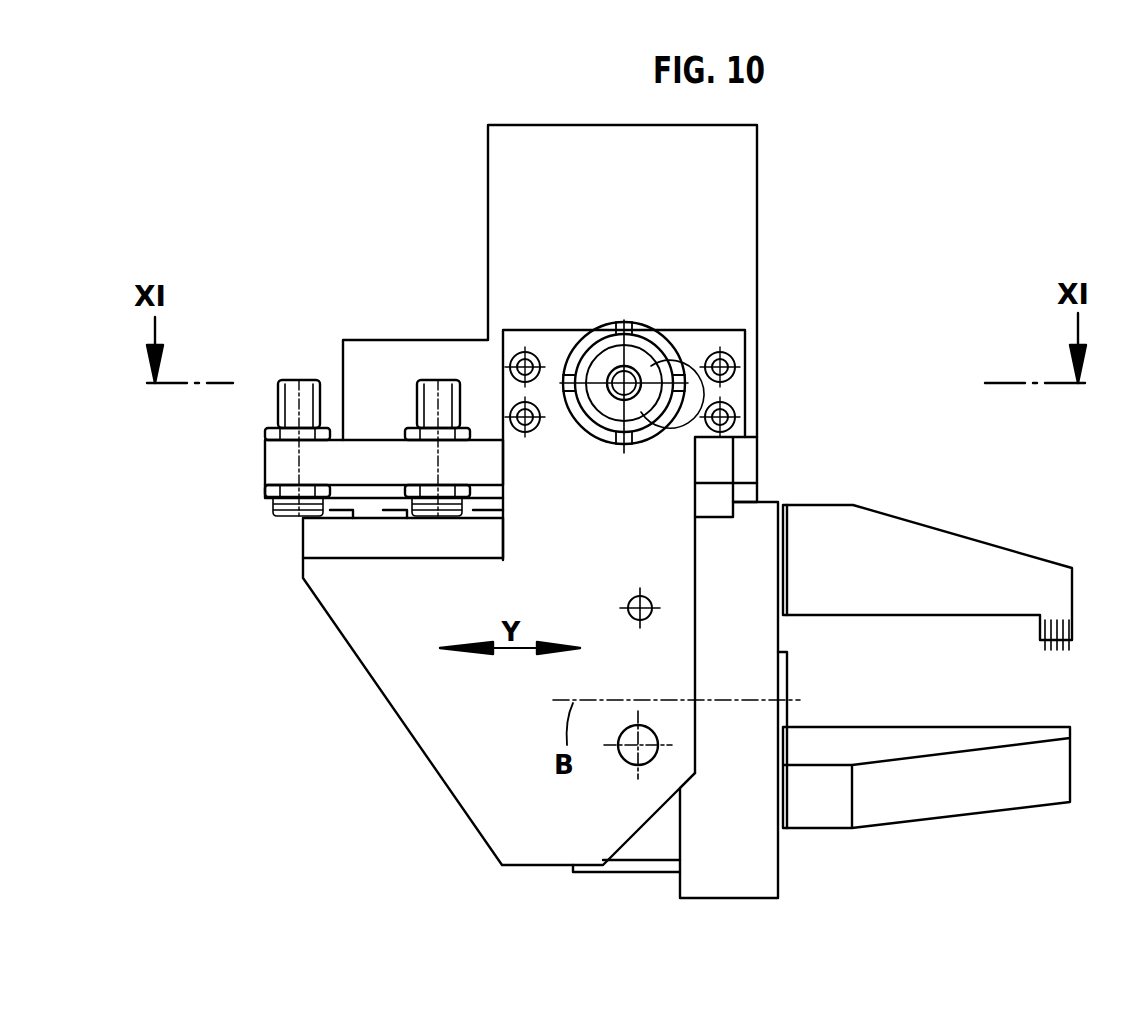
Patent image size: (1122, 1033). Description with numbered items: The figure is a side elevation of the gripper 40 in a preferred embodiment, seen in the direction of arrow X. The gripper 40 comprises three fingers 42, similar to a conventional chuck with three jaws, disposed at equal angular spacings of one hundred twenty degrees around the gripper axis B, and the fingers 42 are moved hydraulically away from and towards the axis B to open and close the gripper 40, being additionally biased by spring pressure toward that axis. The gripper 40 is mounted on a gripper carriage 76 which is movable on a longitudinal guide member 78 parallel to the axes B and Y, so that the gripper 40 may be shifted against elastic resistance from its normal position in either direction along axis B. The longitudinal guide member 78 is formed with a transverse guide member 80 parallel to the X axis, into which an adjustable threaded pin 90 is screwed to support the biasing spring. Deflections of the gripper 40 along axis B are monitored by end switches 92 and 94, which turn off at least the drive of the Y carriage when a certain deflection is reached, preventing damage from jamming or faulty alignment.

The gripper 40 is at (852, 467).
The fingers 42 is at (940, 558).
The gripper carriage 76 is at (720, 495).
The longitudinal guide member 78 is at (717, 458).
The transverse guide member 80 is at (694, 345).
The threaded pin 90 is at (612, 360).
The end switch 92 is at (430, 383).
The end switch 94 is at (292, 383).